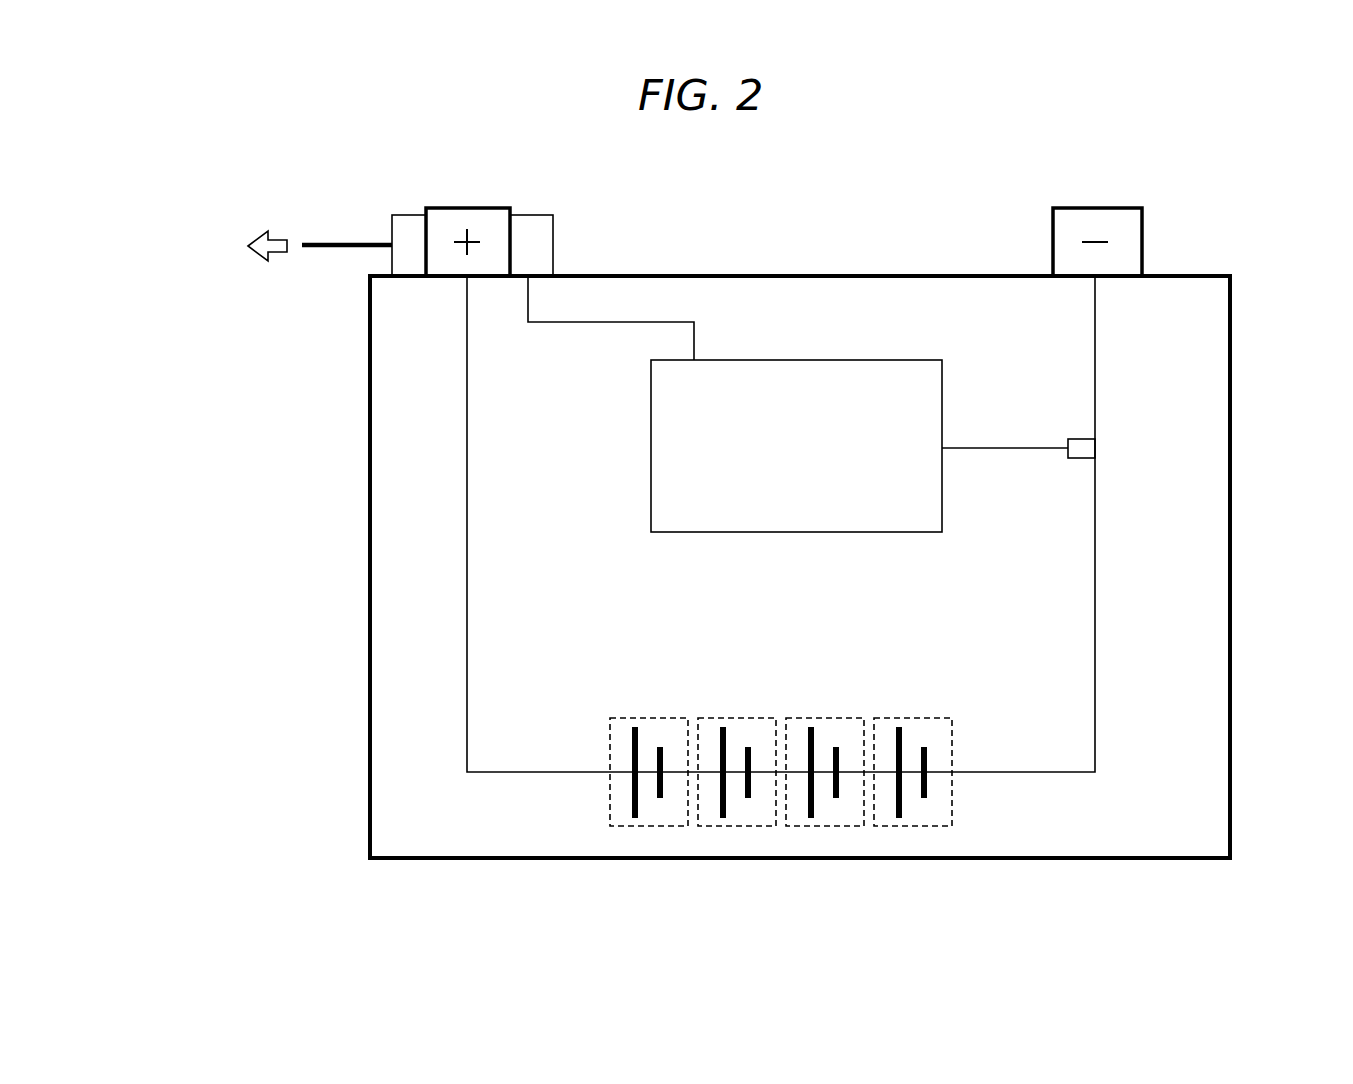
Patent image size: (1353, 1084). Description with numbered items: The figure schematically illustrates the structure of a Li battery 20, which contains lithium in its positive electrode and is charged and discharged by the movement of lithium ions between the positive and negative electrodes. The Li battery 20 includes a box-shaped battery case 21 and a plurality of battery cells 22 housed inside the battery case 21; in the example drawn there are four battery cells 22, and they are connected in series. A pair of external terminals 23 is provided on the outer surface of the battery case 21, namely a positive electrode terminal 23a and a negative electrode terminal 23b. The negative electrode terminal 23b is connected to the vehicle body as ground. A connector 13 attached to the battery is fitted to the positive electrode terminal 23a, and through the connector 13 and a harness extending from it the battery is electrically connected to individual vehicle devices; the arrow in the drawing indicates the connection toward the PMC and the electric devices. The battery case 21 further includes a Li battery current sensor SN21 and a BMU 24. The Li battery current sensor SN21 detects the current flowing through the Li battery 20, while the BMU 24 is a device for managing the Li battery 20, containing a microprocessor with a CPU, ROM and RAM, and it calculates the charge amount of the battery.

The Li battery 20 is at (965, 187).
The battery case 21 is at (1232, 395).
The connector 13 is at (412, 232).
The external terminals 23 is at (793, 210).
The positive electrode terminal 23a is at (468, 208).
The negative electrode terminal 23b is at (1095, 208).
The BMU 24 is at (905, 360).
The Li battery current sensor SN21 is at (1080, 438).
The battery cells 22 is at (645, 829).